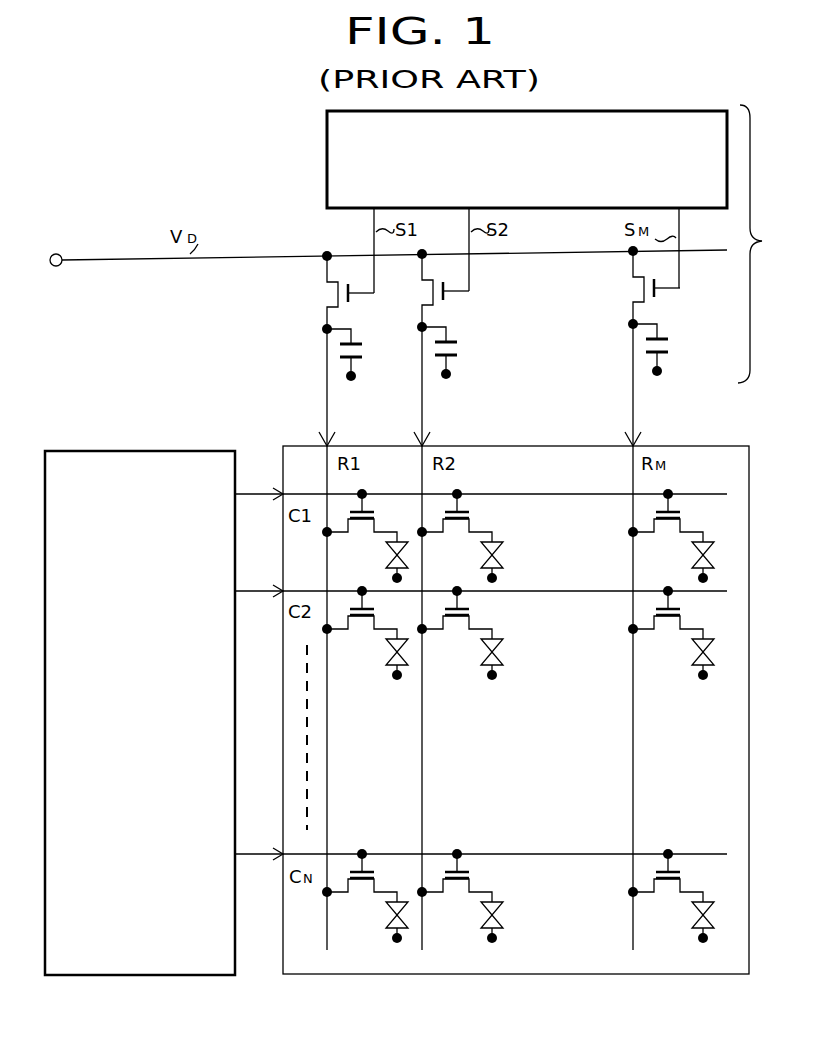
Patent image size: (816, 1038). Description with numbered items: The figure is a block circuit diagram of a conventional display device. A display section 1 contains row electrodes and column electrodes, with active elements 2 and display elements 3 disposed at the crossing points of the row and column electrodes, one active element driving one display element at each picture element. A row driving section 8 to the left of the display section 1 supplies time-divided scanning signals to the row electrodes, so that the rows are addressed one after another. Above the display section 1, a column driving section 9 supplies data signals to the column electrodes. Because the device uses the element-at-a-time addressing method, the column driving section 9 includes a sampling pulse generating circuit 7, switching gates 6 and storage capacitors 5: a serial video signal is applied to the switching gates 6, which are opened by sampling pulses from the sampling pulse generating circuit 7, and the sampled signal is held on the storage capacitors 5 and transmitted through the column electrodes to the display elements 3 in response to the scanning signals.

The display section 1 is at (540, 446).
The active elements 2 is at (682, 512).
The display elements 3 is at (695, 556).
The storage capacitors 5 is at (668, 347).
The switching gates 6 is at (653, 292).
The sampling pulse generating circuit 7 is at (327, 166).
The row driving section 8 is at (145, 451).
The column driving section 9 is at (759, 244).